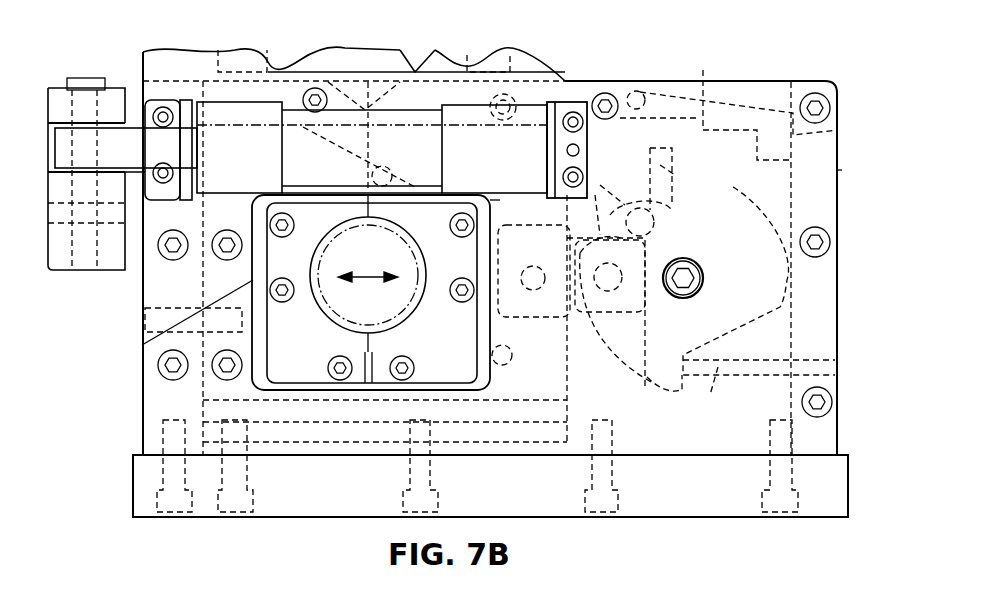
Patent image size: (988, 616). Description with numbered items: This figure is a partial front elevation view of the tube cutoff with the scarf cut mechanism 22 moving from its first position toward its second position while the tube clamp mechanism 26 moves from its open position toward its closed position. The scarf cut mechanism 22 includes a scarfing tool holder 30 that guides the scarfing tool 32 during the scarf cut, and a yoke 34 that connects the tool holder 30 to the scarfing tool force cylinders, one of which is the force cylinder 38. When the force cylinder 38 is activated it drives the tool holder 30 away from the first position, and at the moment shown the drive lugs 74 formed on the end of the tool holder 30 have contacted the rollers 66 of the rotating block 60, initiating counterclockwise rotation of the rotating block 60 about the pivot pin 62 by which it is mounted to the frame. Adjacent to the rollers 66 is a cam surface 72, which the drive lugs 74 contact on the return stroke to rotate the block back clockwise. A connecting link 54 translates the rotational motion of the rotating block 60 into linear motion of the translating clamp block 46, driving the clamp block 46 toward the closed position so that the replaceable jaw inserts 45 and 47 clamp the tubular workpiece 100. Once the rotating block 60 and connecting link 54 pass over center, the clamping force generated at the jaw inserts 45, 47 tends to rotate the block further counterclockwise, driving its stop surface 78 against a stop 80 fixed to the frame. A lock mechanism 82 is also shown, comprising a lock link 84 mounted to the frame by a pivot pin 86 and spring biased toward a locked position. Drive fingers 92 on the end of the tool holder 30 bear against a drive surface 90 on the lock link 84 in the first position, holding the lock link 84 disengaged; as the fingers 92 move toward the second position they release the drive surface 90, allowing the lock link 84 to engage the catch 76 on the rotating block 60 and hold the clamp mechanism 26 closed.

The scarf cut mechanism 22 is at (106, 377).
The tube clamp mechanism 26 is at (630, 448).
The scarfing tool holder 30 is at (628, 165).
The scarfing tool 32 is at (493, 206).
The yoke 34 is at (68, 257).
The scarfing tool force cylinder 38 is at (245, 115).
The jaw insert 45 is at (276, 380).
The translating clamp block 46 is at (520, 390).
The jaw insert 47 is at (443, 380).
The connecting link 54 is at (606, 314).
The rotating block 60 is at (724, 249).
The pivot pin 62 is at (703, 283).
The roller 66 is at (657, 218).
The cam surface 72 is at (679, 179).
The drive lug 74 is at (602, 210).
The catch 76 is at (838, 172).
The stop surface 78 is at (616, 326).
The stop 80 is at (682, 391).
The lock mechanism 82 is at (760, 83).
The lock link 84 is at (513, 227).
The pivot pin 86 is at (637, 90).
The drive surface 90 is at (708, 78).
The drive finger 92 is at (679, 92).
The tubular workpiece 100 is at (344, 231).